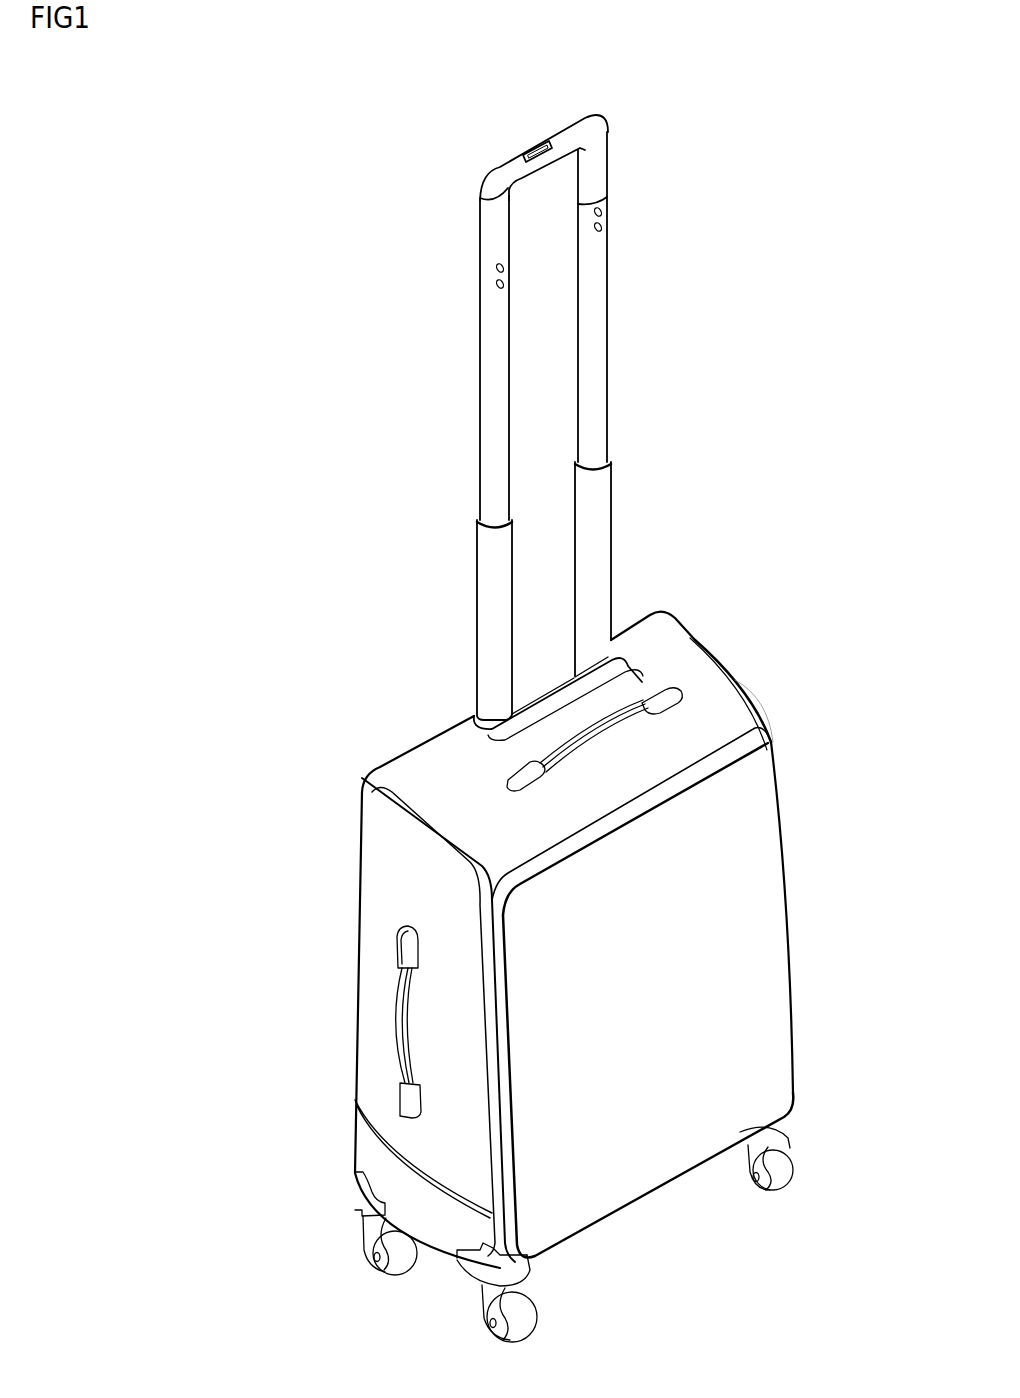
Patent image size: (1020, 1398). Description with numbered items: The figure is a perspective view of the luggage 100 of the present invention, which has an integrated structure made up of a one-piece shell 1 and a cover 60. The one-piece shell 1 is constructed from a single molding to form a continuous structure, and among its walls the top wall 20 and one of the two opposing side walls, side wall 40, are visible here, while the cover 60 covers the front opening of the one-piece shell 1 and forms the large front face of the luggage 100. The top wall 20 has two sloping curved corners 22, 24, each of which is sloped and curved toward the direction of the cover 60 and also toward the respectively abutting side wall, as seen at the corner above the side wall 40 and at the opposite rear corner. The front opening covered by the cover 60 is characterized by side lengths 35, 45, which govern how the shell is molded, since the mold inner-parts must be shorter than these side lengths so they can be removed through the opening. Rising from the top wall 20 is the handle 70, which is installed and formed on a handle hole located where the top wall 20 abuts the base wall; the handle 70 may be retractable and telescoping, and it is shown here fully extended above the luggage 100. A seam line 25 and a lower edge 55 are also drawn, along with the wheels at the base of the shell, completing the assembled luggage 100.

The luggage 100 is at (280, 470).
The one-piece shell 1 is at (712, 635).
The handle 70 is at (598, 318).
The top wall 20 is at (445, 772).
The sloping curved corner 22 is at (492, 868).
The sloping curved corner 24 is at (758, 714).
The zipper / coupling line 25 is at (643, 790).
The side length 35 is at (786, 908).
The cover 60 is at (745, 988).
The side length 45 is at (500, 1070).
The bottom portion 55 is at (658, 1186).
The side wall 40 is at (380, 980).